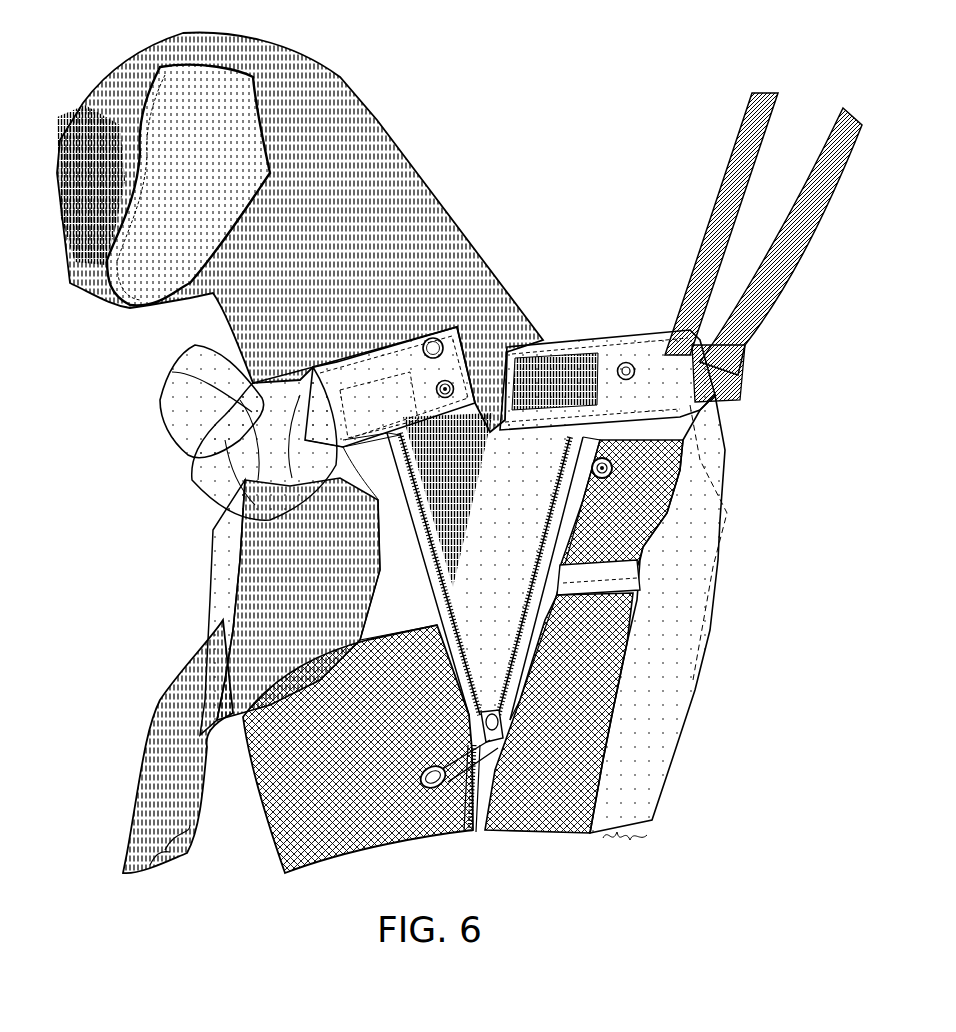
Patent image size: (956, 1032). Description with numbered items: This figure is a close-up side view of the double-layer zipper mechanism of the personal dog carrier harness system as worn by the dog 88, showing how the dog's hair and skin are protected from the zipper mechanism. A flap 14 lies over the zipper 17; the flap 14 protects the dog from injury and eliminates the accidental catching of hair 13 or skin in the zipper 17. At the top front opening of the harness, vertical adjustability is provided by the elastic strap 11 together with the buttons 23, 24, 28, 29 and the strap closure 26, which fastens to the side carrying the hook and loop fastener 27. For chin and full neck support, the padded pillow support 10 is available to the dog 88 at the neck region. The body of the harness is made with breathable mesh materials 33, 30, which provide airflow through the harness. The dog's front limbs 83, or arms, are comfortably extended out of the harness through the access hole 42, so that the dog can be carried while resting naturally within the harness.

The dog 88 is at (358, 75).
The padded pillow support 10 is at (172, 428).
The elastic strap 11 is at (235, 487).
The strap closure 26 is at (455, 357).
The button 23 is at (440, 338).
The button 24 is at (452, 382).
The hook and loop fastener 27 is at (547, 372).
The button 28 is at (627, 360).
The button 29 is at (620, 468).
The hair 13 is at (448, 520).
The flap 14 is at (490, 618).
The zipper 17 is at (505, 722).
The breathable mesh material 33 is at (575, 770).
The breathable mesh material 30 is at (293, 816).
The access hole 42 is at (248, 580).
The front limbs 83 is at (170, 750).